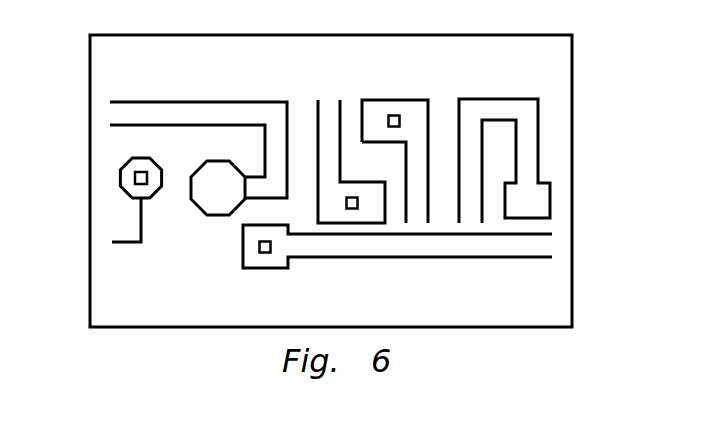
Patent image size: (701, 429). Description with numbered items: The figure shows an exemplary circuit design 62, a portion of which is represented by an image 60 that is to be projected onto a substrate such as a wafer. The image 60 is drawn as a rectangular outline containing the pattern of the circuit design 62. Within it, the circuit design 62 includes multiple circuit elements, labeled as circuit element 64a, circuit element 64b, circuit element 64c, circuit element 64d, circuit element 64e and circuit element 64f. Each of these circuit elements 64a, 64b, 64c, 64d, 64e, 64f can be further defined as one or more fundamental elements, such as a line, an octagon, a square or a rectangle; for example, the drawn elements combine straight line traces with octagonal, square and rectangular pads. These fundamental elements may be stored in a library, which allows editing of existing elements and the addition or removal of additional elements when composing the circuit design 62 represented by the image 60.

The image 60 is at (90, 197).
The circuit design 62 is at (604, 156).
The circuit element 64a is at (155, 199).
The circuit element 64b is at (188, 101).
The circuit element 64c is at (318, 101).
The circuit element 64d is at (398, 100).
The circuit element 64e is at (503, 99).
The circuit element 64f is at (427, 258).